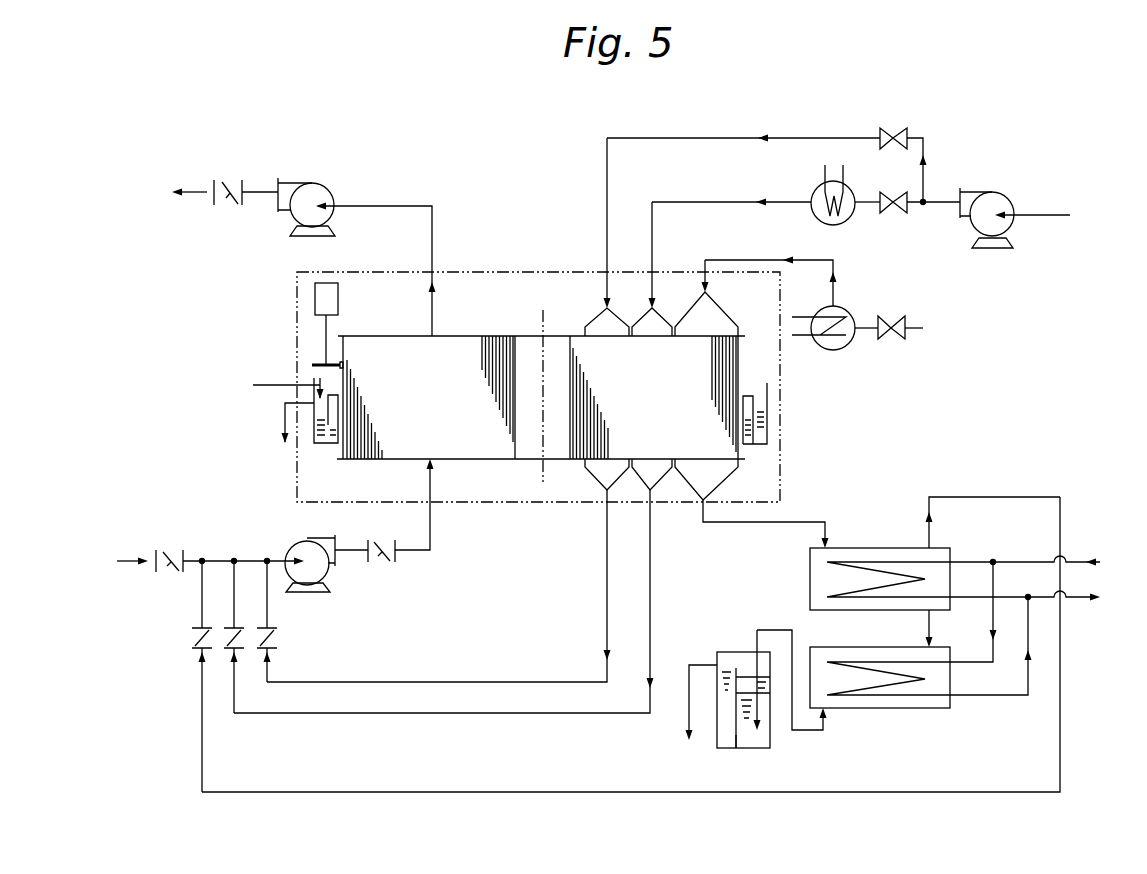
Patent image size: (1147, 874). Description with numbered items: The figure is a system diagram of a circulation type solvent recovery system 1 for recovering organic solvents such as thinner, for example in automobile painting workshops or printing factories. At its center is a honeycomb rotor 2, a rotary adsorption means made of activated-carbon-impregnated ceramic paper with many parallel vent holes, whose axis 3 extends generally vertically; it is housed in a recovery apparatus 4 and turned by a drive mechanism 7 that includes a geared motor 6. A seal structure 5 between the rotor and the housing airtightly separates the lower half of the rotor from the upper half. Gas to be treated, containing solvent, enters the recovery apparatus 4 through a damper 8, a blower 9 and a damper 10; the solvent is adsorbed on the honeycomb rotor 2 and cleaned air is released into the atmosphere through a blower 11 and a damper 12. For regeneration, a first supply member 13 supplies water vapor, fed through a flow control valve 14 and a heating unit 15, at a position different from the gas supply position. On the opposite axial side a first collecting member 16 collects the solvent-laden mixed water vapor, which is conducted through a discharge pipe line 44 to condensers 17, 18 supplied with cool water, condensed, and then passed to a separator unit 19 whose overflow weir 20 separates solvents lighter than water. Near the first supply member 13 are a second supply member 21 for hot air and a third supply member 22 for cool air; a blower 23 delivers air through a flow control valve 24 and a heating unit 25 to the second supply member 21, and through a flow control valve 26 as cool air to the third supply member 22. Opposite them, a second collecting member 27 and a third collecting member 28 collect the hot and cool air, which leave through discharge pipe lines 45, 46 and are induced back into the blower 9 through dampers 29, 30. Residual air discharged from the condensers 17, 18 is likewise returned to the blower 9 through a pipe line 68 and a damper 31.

The circulation type solvent recovery system 1 is at (1018, 96).
The honeycomb rotor 2 is at (456, 334).
The axis 3 is at (540, 324).
The recovery apparatus 4 is at (772, 486).
The seal structure 5 is at (772, 408).
The geared motor 6 is at (318, 298).
The drive mechanism 7 is at (310, 355).
The damper 8 is at (165, 551).
The blower 9 is at (302, 545).
The damper 10 is at (392, 556).
The blower 11 is at (308, 190).
The damper 12 is at (226, 184).
The first supply member 13 is at (718, 320).
The flow control valve 14 is at (887, 318).
The heating unit 15 is at (840, 308).
The first collecting member 16 is at (717, 475).
The condenser 17 is at (851, 549).
The condenser 18 is at (826, 656).
The separator unit 19 is at (742, 658).
The overflow weir 20 is at (741, 735).
The second supply member 21 is at (660, 322).
The third supply member 22 is at (598, 320).
The blower 23 is at (998, 200).
The flow control valve 24 is at (897, 214).
The heating unit 25 is at (838, 222).
The flow control valve 26 is at (893, 128).
The second collecting member 27 is at (661, 478).
The third collecting member 28 is at (596, 473).
The damper 29 is at (236, 637).
The damper 30 is at (270, 636).
The damper 31 is at (198, 637).
The discharge pipe line 44 is at (762, 523).
The discharge pipe line 45 is at (652, 553).
The discharge pipe line 46 is at (608, 553).
The pipe line 68 is at (922, 792).